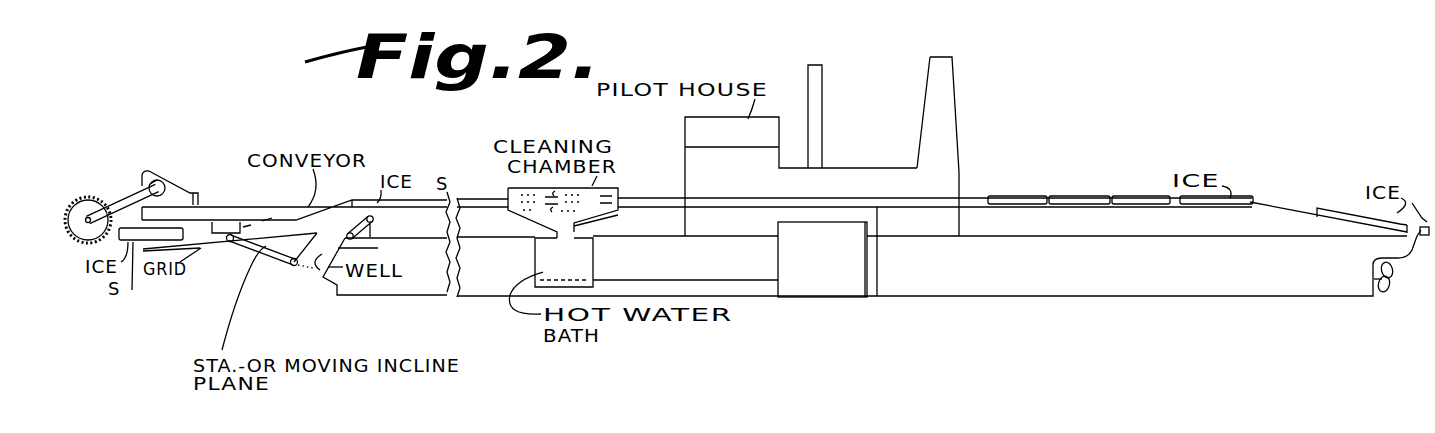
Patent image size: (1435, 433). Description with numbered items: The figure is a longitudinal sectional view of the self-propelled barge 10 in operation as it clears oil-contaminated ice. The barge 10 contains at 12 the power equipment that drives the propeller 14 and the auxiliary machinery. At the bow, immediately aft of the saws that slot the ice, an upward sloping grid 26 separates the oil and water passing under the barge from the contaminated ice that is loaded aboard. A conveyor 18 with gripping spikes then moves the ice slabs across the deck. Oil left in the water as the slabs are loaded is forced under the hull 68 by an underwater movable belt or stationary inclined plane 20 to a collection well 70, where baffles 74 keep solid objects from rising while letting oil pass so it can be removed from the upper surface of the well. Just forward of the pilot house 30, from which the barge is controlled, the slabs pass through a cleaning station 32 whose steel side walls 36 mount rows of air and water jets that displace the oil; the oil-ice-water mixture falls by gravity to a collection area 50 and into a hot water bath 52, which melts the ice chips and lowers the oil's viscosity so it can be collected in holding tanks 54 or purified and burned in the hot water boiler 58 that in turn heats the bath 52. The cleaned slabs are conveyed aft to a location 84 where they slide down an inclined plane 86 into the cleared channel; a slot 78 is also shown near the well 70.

The self-propelled barge 10 is at (460, 161).
The power equipment location 12 is at (1099, 285).
The propeller 14 is at (1386, 291).
The conveyor 18 is at (333, 201).
The inclined plane 20 is at (310, 273).
The upward sloping grid 26 is at (203, 252).
The pilot house 30 is at (686, 158).
The cleaning station 32 is at (512, 189).
The steel side walls 36 is at (618, 192).
The collection area 50 is at (576, 228).
The hot water bath 52 is at (595, 268).
The holding tanks 54 is at (733, 263).
The hot water boiler 58 is at (828, 292).
The hull 68 is at (328, 283).
The collection well 70 is at (392, 252).
The baffles 74 is at (307, 298).
The slot 78 is at (374, 224).
The location 84 is at (1243, 200).
The inclined plane 86 is at (1276, 211).